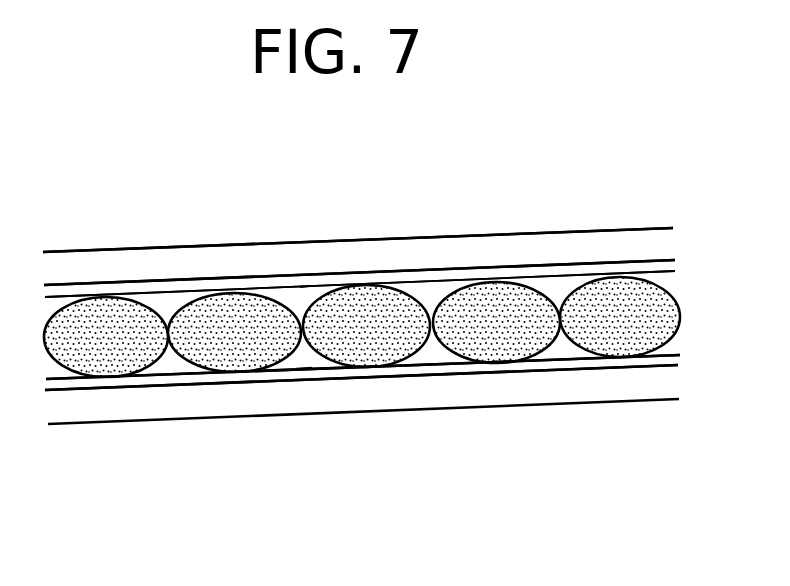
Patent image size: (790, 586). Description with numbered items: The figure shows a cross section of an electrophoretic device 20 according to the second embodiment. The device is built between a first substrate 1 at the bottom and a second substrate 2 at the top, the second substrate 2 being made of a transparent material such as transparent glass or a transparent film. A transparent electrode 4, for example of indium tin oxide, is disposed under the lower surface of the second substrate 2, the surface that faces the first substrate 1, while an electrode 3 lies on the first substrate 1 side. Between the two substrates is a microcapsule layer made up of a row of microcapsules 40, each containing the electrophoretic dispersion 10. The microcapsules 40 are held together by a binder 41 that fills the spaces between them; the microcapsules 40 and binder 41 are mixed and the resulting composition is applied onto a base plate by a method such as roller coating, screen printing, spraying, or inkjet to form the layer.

The first substrate 1 is at (163, 403).
The second substrate 2 is at (82, 266).
The electrode 3 is at (273, 383).
The transparent electrode 4 is at (207, 288).
The electrophoretic dispersion 10 is at (497, 300).
The electrophoretic device 20 is at (547, 230).
The microcapsules 40 is at (422, 290).
The binder 41 is at (303, 300).